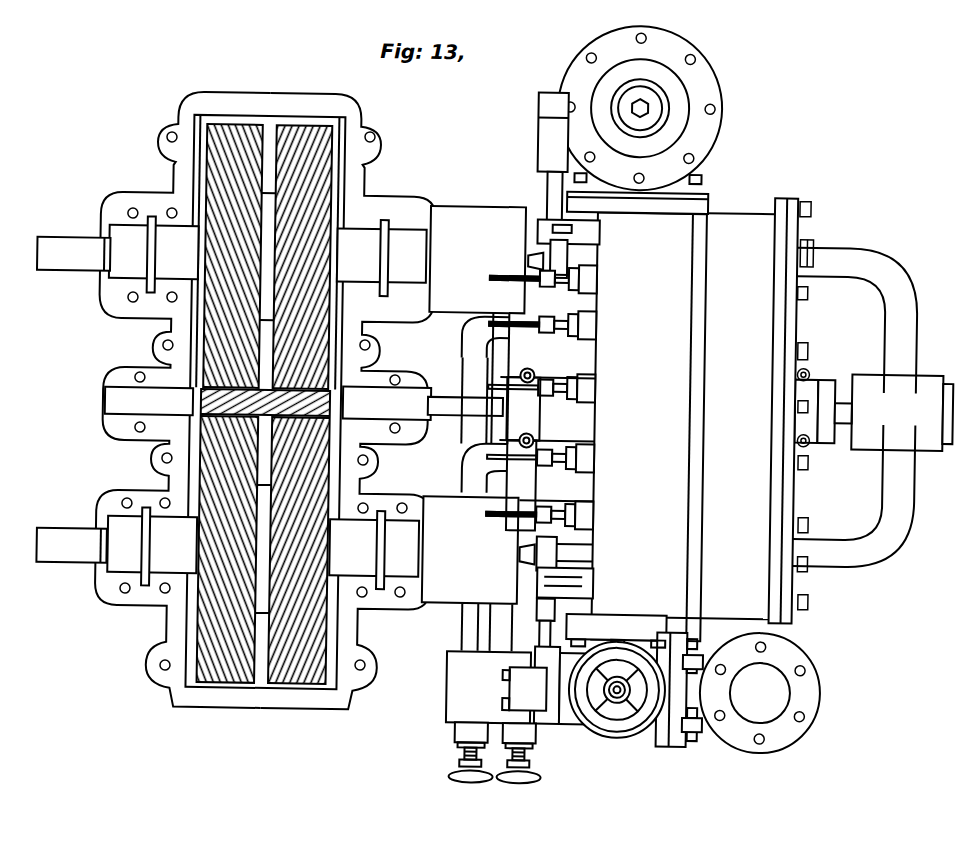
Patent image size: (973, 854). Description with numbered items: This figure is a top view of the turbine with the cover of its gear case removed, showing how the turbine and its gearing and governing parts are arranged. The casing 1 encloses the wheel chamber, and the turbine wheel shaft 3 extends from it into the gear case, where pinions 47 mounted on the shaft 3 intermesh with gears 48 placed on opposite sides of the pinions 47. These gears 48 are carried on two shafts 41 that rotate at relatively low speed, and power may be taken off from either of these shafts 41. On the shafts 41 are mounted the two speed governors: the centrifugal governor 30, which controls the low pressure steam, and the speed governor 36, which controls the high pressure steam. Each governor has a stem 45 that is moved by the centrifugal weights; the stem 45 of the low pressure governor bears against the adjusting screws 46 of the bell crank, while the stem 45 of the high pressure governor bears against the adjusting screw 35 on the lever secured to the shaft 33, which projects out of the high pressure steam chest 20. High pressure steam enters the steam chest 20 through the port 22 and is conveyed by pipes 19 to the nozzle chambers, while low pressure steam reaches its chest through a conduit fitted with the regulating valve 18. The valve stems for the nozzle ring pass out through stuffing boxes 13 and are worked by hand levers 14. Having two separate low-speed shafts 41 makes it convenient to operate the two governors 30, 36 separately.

The casing 1 is at (685, 224).
The shaft 3 is at (447, 399).
The stuffing boxes 13 is at (583, 309).
The hand levers 14 is at (503, 279).
The regulating valve 18 is at (665, 98).
The pipes 19 is at (480, 368).
The high pressure steam chest 20 is at (450, 685).
The port 22 is at (784, 694).
The centrifugal governor 30 is at (461, 210).
The shaft 33 is at (546, 624).
The adjusting screw 35 is at (562, 548).
The speed governor 36 is at (448, 604).
The shafts 41 is at (88, 269).
The stem 45 is at (526, 258).
The adjusting screws 46 is at (538, 258).
The pinions 47 is at (342, 402).
The gears 48 is at (203, 366).